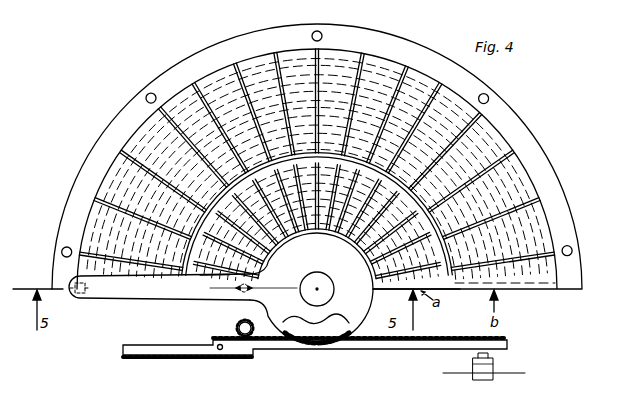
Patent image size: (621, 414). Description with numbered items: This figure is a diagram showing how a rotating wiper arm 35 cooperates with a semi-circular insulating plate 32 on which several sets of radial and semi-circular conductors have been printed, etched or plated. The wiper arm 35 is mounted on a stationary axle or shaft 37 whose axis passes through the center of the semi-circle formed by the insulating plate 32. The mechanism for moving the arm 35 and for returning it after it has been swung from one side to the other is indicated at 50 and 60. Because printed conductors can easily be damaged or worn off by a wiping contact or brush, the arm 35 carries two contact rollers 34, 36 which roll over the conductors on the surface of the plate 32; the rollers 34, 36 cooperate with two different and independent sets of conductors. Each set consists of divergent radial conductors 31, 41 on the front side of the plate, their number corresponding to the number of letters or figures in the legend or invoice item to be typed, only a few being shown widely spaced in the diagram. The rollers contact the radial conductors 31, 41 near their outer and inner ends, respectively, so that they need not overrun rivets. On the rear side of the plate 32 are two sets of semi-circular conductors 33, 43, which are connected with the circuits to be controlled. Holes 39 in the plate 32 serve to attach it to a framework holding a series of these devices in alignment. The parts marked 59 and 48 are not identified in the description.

The radial conductors 31 is at (112, 202).
The insulating plate 32 is at (143, 218).
The semi-circular conductors 33 is at (527, 268).
The contact roller 34 is at (84, 296).
The rotating wiper arm 35 is at (150, 298).
The contact roller 36 is at (249, 286).
The stationary axle or shaft 37 is at (328, 296).
The holes 39 is at (572, 248).
The radial conductors 41 is at (210, 279).
The semi-circular conductors 43 is at (423, 291).
The mechanism for moving the wiper arm 50 is at (325, 344).
The base line 59 is at (26, 310).
The mechanism for returning the wiper arm 60 is at (492, 369).
The lever 48 is at (9, 389).